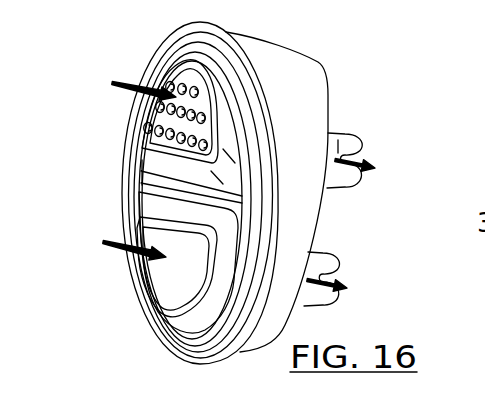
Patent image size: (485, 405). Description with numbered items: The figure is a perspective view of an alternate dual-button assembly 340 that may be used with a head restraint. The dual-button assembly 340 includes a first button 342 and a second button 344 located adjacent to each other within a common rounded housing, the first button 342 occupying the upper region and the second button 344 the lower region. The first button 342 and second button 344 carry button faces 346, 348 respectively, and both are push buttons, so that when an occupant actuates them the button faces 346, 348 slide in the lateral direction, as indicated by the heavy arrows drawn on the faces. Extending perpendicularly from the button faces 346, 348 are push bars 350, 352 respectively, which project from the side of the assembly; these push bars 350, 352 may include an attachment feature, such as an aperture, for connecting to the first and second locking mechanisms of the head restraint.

The dual-button assembly 340 is at (113, 64).
The first button 342 is at (184, 103).
The second button 344 is at (181, 292).
The button face 346 is at (181, 82).
The button face 348 is at (166, 277).
The push bar 350 is at (340, 140).
The push bar 352 is at (320, 255).